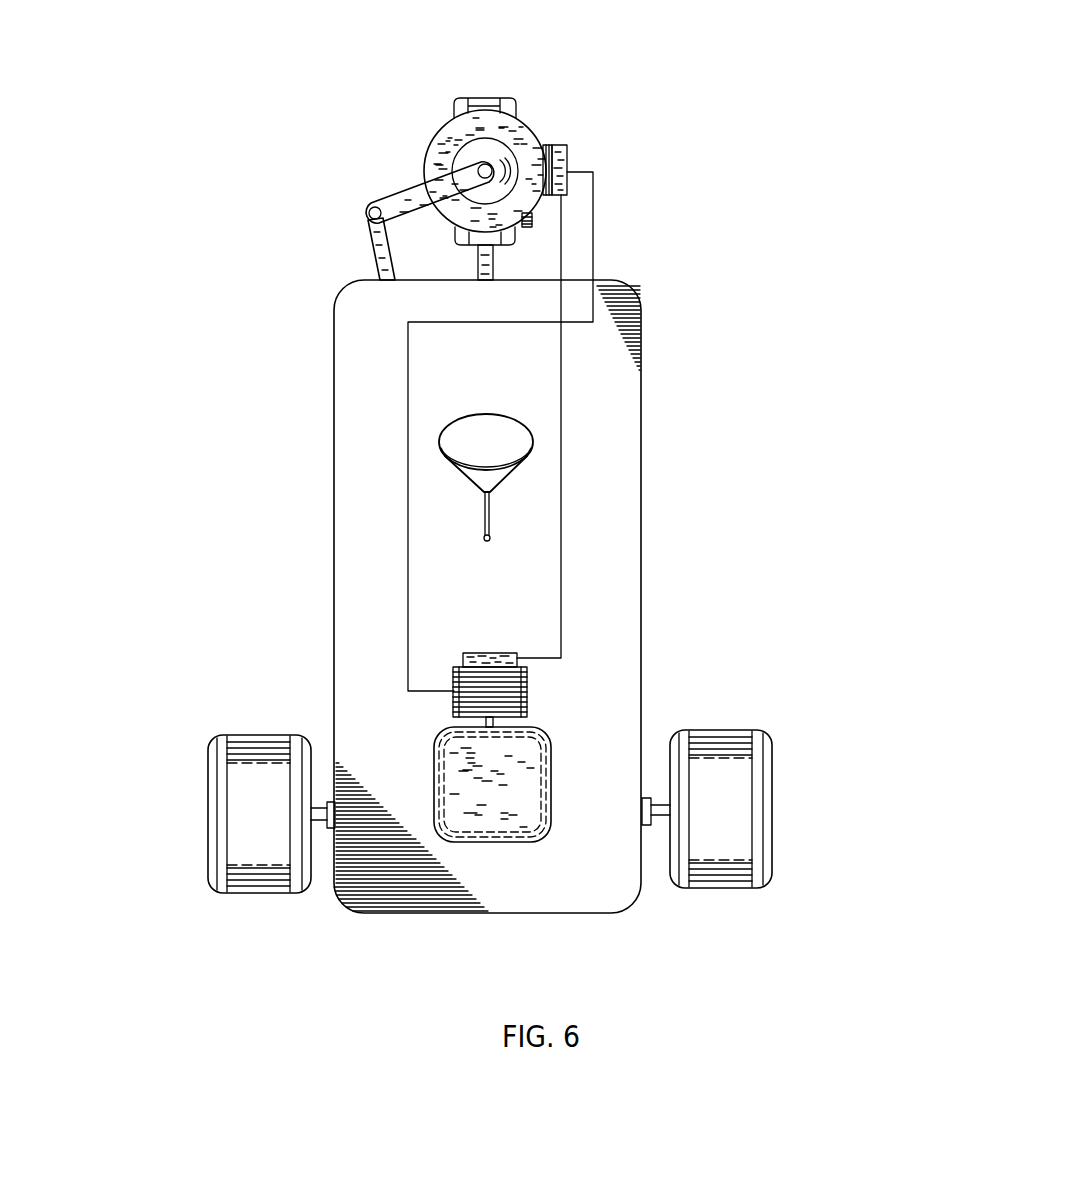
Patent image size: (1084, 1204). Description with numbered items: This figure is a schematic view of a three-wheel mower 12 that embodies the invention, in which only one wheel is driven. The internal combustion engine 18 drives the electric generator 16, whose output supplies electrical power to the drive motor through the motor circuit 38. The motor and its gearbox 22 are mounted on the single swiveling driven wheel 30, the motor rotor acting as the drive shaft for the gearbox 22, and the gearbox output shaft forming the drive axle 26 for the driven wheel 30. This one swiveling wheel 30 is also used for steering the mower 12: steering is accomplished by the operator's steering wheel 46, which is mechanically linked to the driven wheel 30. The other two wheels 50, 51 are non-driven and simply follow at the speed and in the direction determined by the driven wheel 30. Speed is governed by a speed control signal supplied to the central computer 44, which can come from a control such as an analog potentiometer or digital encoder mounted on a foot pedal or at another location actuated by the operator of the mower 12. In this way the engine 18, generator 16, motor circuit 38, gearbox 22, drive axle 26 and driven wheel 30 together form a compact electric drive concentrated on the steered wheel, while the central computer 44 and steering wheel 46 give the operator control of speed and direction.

The three-wheel mower 12 is at (345, 320).
The electric generator 16 is at (527, 680).
The internal combustion engine 18 is at (437, 743).
The gearbox 22 is at (532, 223).
The drive axle 26 is at (548, 145).
The driven wheel 30 is at (485, 98).
The motor circuit 38 is at (567, 147).
The central computer 44 is at (462, 653).
The steering wheel 46 is at (535, 444).
The non-driven wheel 50 is at (253, 735).
The non-driven wheel 51 is at (718, 730).